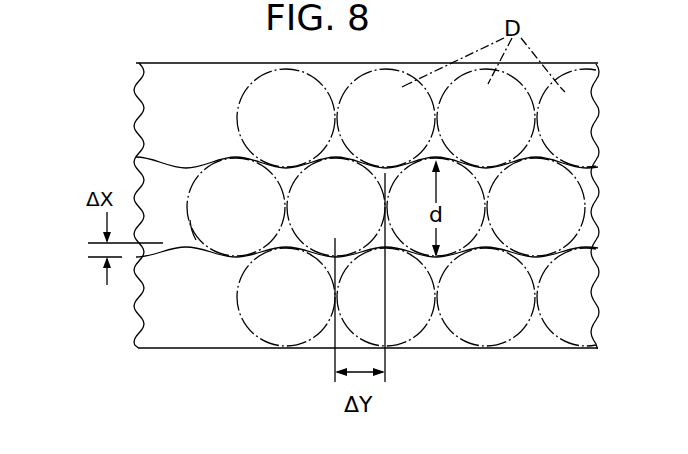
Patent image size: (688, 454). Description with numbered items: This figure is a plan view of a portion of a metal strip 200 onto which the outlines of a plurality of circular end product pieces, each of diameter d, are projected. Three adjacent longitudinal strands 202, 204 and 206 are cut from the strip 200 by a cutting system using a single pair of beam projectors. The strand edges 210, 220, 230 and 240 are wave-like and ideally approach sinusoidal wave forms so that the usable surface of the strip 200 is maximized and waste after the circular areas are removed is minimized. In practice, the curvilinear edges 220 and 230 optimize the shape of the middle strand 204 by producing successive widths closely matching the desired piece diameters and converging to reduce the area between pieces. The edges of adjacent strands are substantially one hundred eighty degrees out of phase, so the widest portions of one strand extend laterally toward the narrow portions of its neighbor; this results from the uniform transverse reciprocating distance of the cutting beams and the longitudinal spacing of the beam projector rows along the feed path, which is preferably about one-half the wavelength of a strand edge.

The strip 200 is at (215, 57).
The strand 202 is at (146, 83).
The strand 204 is at (148, 161).
The strand 206 is at (160, 327).
The strand edge 210 is at (192, 171).
The strand edge 220 is at (173, 160).
The strand edge 230 is at (180, 250).
The strand edge 240 is at (196, 240).